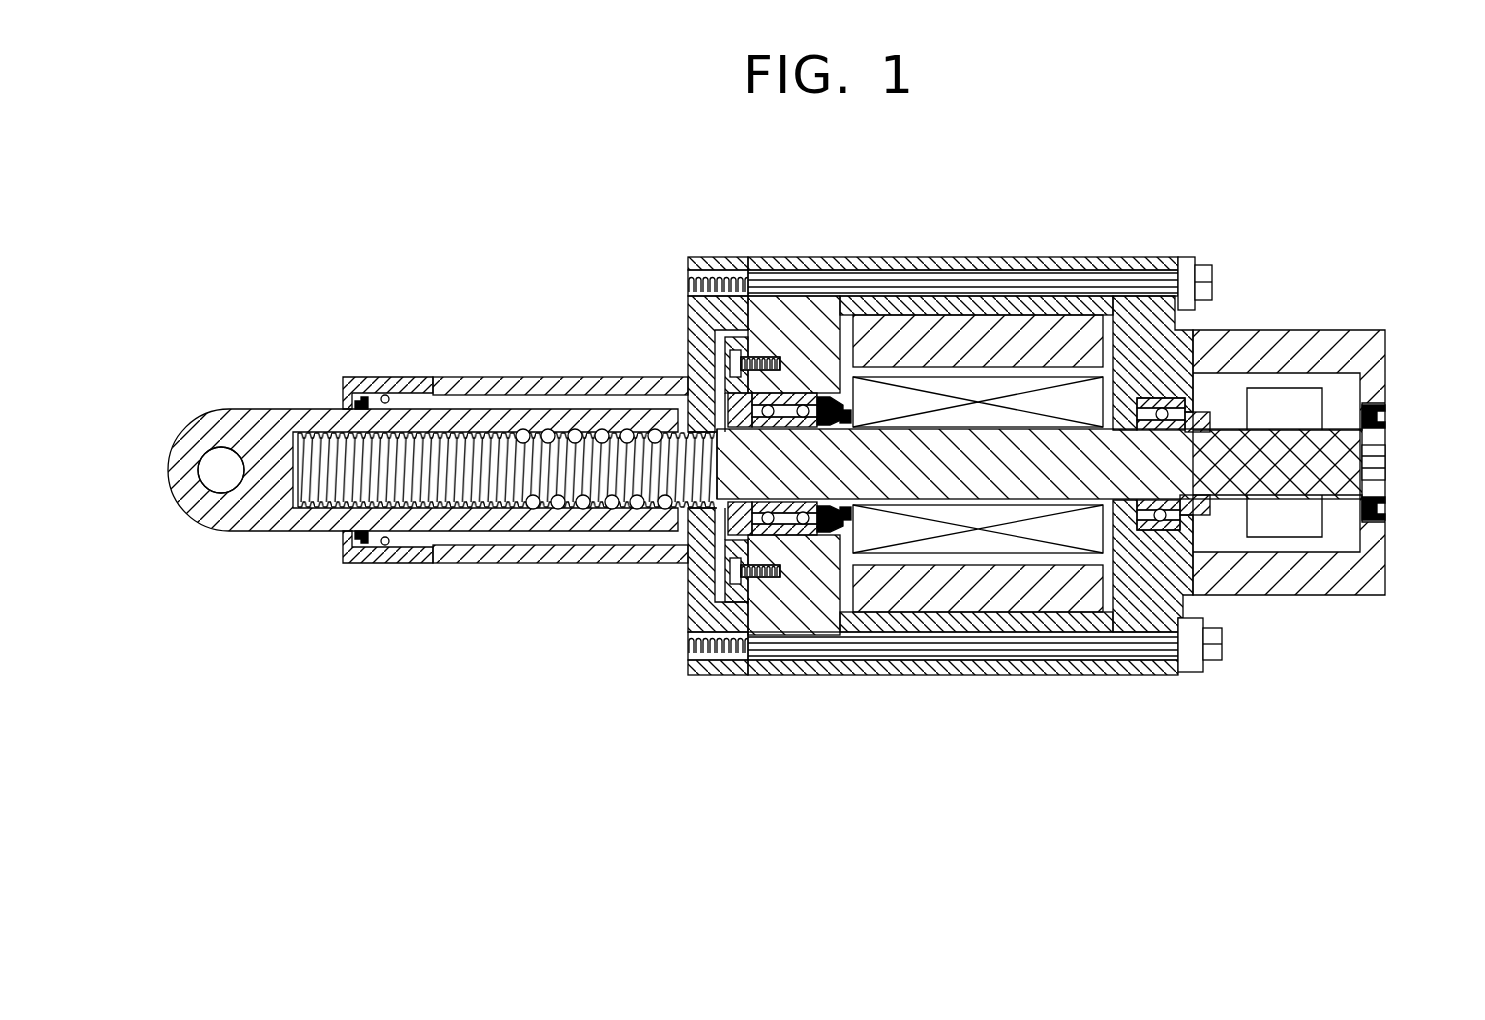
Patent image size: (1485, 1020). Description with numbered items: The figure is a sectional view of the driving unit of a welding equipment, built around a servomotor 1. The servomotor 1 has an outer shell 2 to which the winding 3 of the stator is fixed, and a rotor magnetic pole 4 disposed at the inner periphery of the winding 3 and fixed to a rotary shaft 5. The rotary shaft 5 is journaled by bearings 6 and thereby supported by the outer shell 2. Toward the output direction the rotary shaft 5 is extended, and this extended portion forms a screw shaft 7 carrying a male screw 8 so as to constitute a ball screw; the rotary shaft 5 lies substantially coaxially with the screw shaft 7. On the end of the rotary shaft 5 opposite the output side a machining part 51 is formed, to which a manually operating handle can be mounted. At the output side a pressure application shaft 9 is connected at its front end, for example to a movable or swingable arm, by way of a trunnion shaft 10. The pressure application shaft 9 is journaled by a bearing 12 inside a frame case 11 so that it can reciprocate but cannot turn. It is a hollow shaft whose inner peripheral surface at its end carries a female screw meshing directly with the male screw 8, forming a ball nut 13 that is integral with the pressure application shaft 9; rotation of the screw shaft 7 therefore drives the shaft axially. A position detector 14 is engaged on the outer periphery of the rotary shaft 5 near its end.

The servomotor 1 is at (867, 247).
The outer shell 2 is at (797, 265).
The winding 3 is at (1005, 600).
The rotor magnetic pole 4 is at (945, 540).
The rotary shaft 5 is at (1073, 490).
The bearings 6 is at (803, 535).
The screw shaft 7 is at (688, 500).
The male screw 8 is at (422, 437).
The pressure application shaft 9 is at (269, 432).
The trunnion shaft 10 is at (221, 483).
The frame case 11 is at (617, 385).
The bearing 12 is at (398, 547).
The ball nut 13 is at (525, 432).
The position detector 14 is at (1283, 515).
The machining part 51 is at (1378, 465).